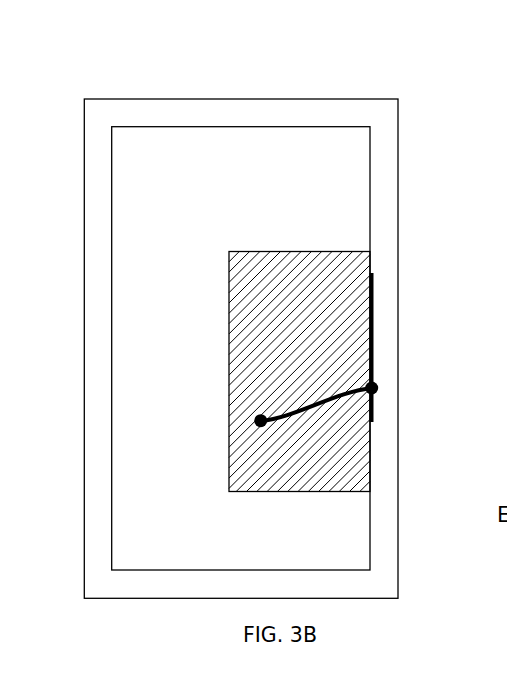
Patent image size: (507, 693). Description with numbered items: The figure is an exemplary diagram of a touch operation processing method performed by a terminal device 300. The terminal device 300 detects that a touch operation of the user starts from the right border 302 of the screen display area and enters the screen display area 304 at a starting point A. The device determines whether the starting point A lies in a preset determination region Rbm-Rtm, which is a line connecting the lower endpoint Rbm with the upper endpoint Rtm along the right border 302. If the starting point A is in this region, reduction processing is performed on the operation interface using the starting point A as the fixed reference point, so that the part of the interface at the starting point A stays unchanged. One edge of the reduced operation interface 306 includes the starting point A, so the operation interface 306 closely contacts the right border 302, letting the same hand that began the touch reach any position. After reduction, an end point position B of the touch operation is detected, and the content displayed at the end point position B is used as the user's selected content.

The right border 302 is at (385, 152).
The screen display area 304 is at (360, 216).
The operation interface 306 is at (363, 262).
The upper endpoint of the determination region Rtm is at (373, 278).
The lower endpoint of the determination region Rbm is at (373, 421).
The starting point A is at (374, 386).
The end point position B is at (258, 420).
The terminal device 300 is at (485, 597).